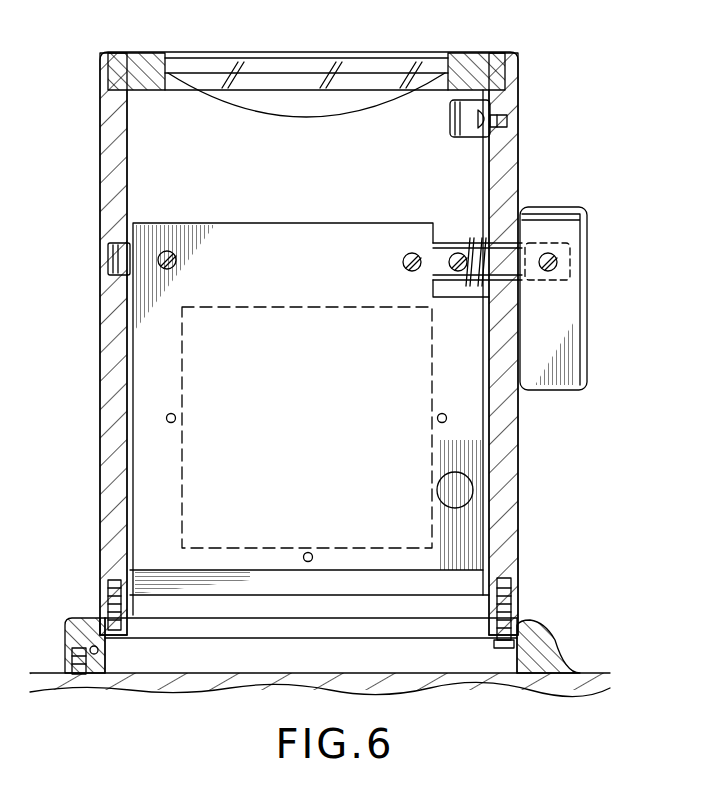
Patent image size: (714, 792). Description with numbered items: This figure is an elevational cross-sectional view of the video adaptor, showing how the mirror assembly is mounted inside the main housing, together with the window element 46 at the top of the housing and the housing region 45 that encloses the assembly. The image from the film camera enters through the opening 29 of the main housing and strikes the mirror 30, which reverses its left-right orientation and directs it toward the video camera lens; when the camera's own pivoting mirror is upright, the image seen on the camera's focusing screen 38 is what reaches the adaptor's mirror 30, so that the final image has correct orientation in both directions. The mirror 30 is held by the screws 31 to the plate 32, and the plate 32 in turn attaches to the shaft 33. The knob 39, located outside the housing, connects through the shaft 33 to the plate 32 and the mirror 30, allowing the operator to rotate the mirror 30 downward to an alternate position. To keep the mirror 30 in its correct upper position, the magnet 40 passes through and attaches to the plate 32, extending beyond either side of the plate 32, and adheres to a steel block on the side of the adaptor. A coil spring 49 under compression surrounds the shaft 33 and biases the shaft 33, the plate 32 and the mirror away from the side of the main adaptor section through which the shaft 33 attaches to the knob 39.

The opening 29 is at (430, 628).
The mirror 30 is at (295, 335).
The screws 31 is at (166, 418).
The plate 32 is at (324, 257).
The shaft 33 is at (507, 257).
The focusing screen 38 is at (190, 682).
The knob 39 is at (562, 312).
The magnet 40 is at (463, 488).
The housing 45 is at (246, 48).
The lens window 46 is at (274, 98).
The coil spring 49 is at (468, 243).